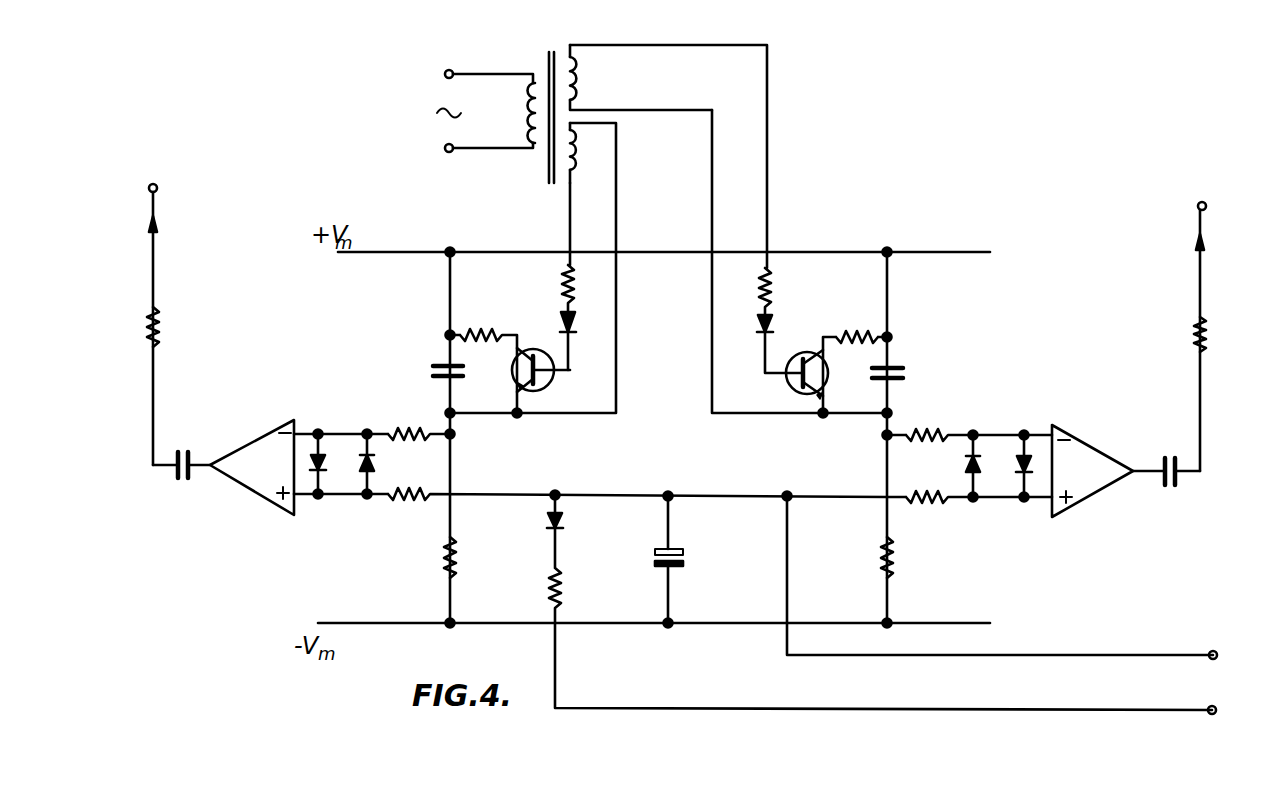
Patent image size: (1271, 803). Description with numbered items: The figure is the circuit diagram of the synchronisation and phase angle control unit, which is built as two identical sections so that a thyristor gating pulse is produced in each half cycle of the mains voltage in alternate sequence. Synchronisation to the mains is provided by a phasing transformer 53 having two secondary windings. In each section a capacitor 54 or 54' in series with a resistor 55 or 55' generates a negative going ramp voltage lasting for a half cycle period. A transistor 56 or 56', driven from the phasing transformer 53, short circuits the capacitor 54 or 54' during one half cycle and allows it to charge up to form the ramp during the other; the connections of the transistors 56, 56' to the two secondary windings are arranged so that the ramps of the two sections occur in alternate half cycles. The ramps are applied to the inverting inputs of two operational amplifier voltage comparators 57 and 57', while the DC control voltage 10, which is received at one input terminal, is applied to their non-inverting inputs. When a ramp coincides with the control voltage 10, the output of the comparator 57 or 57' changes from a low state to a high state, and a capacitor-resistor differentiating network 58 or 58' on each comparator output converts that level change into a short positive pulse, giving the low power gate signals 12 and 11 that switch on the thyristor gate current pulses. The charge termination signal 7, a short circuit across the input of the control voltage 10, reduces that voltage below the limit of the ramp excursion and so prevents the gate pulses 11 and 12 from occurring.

The phasing transformer 53 is at (551, 52).
The capacitor 54 is at (426, 363).
The capacitor 54' is at (911, 365).
The resistor 55 is at (424, 571).
The resistor 55' is at (910, 571).
The transistor 56 is at (541, 349).
The transistor 56' is at (807, 351).
The operational amplifier voltage comparator 57 is at (252, 457).
The operational amplifier voltage comparator 57' is at (1092, 461).
The capacitor-resistor differentiating network 58 is at (178, 496).
The capacitor-resistor differentiating network 58' is at (1167, 502).
The signal 12 is at (157, 186).
The signal 11 is at (1214, 195).
The DC control voltage signal 10 is at (1216, 658).
The charge termination signal 7 is at (1215, 707).